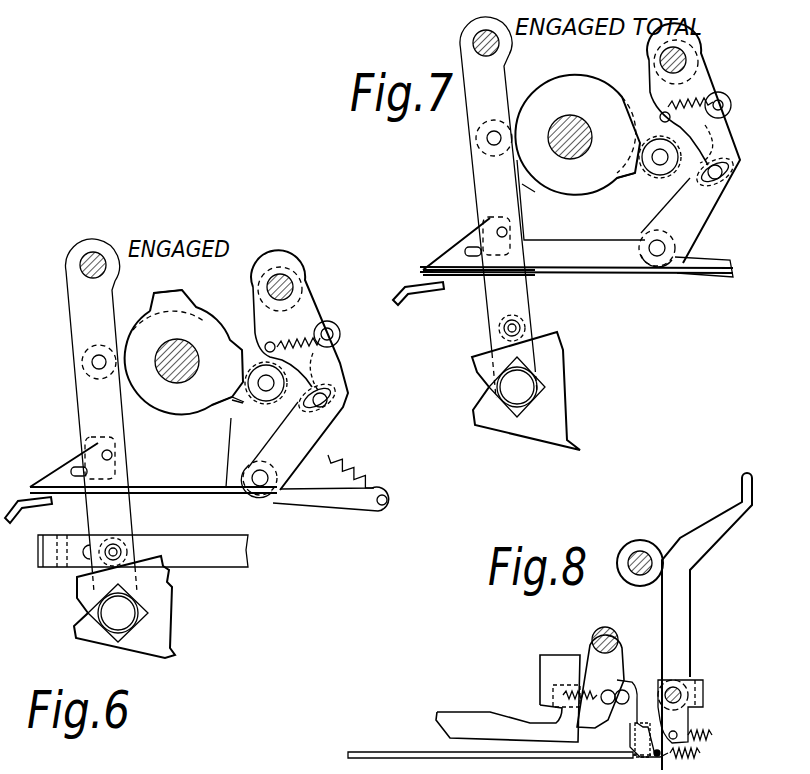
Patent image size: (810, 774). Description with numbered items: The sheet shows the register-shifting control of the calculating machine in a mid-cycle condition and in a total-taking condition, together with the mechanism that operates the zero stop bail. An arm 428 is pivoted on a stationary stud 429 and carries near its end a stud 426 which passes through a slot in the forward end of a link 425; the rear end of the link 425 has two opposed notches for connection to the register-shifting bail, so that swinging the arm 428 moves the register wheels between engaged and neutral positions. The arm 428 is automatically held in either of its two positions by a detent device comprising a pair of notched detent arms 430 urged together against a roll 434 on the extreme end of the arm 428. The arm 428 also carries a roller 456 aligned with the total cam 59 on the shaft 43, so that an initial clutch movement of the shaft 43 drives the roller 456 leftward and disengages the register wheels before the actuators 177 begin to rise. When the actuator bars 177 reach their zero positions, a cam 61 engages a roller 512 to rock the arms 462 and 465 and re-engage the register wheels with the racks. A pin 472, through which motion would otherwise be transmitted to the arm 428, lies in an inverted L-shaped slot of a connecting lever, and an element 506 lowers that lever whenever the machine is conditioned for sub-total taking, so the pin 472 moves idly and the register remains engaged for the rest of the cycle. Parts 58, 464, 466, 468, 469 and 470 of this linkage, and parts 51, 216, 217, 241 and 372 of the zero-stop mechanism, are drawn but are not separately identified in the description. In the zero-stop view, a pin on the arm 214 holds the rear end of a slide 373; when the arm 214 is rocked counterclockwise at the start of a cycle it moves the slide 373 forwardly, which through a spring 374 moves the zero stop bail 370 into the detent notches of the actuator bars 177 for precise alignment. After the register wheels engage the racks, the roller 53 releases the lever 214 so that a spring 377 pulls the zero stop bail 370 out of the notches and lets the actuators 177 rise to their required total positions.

In FIG. 6, the stationary stud 429 is at (83, 262).
In FIG. 7, the stationary stud 429 is at (472, 38).
In FIG. 6, the arm 428 is at (70, 294).
In FIG. 7, the arm 428 is at (478, 182).
In FIG. 6, the roller 456 is at (90, 384).
In FIG. 7, the roller 456 is at (480, 150).
In FIG. 6, the pin 472 is at (100, 447).
In FIG. 7, the pin 472 is at (500, 226).
In FIG. 6, the element 506 is at (20, 497).
In FIG. 7, the element 506 is at (420, 277).
In FIG. 6, the cam 58 is at (207, 325).
In FIG. 7, the cam 58 is at (582, 90).
In FIG. 6, the shaft 43 is at (165, 345).
In FIG. 7, the shaft 43 is at (560, 120).
In FIG. 6, the cam 61 is at (168, 292).
In FIG. 7, the cam 61 is at (620, 176).
In FIG. 6, the total cam 59 is at (232, 402).
In FIG. 7, the total cam 59 is at (540, 195).
In FIG. 6, the roller 512 is at (233, 425).
In FIG. 7, the roller 512 is at (627, 182).
In FIG. 6, the pivot pin 464 is at (291, 289).
In FIG. 7, the pivot pin 464 is at (690, 64).
In FIG. 6, the arm 465 is at (318, 430).
In FIG. 7, the arm 465 is at (745, 210).
In FIG. 6, the arm 462 is at (282, 398).
In FIG. 7, the arm 462 is at (674, 172).
In FIG. 6, the spring 468 is at (330, 323).
In FIG. 7, the spring 468 is at (705, 100).
In FIG. 6, the stop 466 is at (330, 355).
In FIG. 7, the stop 466 is at (655, 95).
In FIG. 6, the link bar 469 is at (327, 494).
In FIG. 7, the link bar 469 is at (708, 261).
In FIG. 6, the spring 470 is at (362, 478).
In FIG. 6, the link 425 is at (215, 548).
In FIG. 6, the stud 426 is at (120, 550).
In FIG. 7, the stud 426 is at (520, 330).
In FIG. 6, the roll 434 is at (100, 612).
In FIG. 7, the roll 434 is at (500, 387).
In FIG. 6, the notched detent arms 430 is at (153, 594).
In FIG. 7, the notched detent arms 430 is at (558, 365).
In FIG. 8, the roller 53 is at (625, 553).
In FIG. 8, the shaft 51 is at (645, 558).
In FIG. 8, the arm 214 is at (678, 620).
In FIG. 8, the pivot 216 is at (678, 697).
In FIG. 8, the spring 217 is at (712, 735).
In FIG. 8, the spring 377 is at (702, 753).
In FIG. 8, the zero stop bail 370 is at (615, 660).
In FIG. 8, the shaft 241 is at (592, 639).
In FIG. 8, the pin 372 is at (615, 690).
In FIG. 8, the spring 374 is at (571, 690).
In FIG. 8, the actuators 177 is at (477, 718).
In FIG. 8, the slide 373 is at (407, 752).